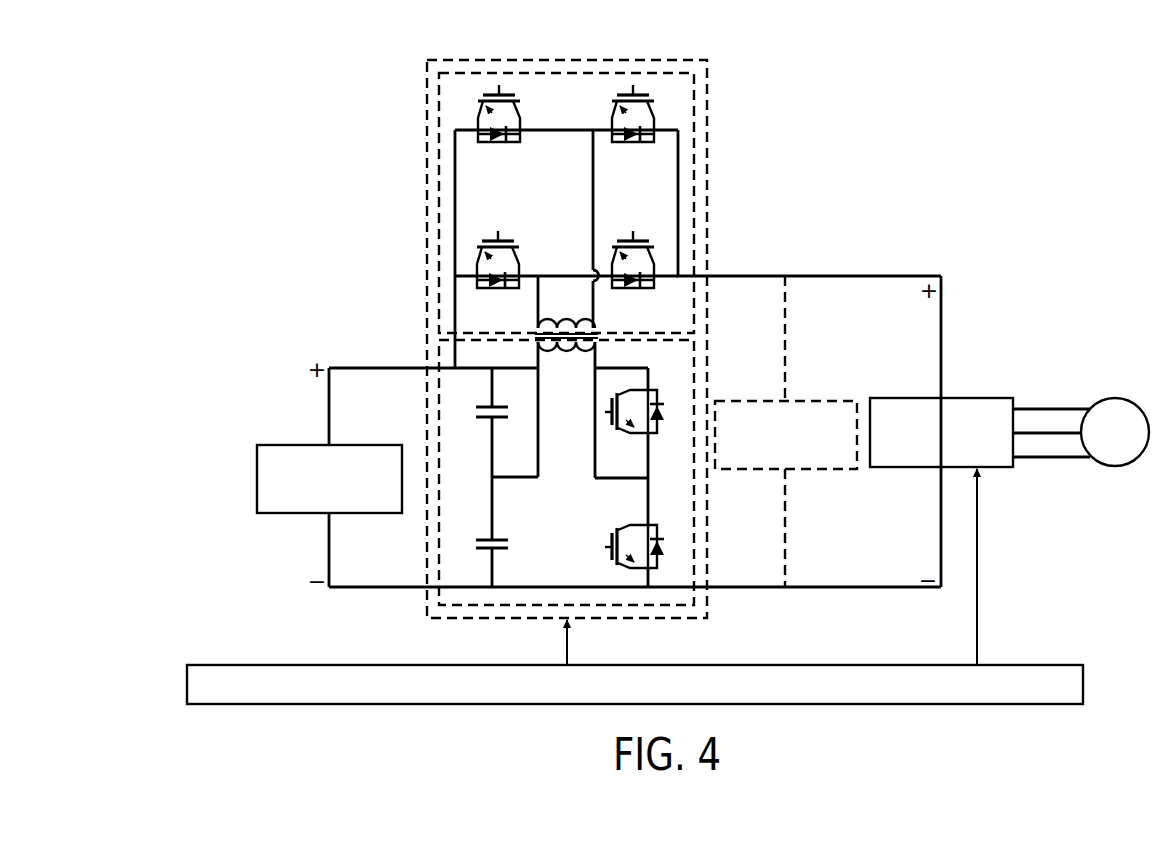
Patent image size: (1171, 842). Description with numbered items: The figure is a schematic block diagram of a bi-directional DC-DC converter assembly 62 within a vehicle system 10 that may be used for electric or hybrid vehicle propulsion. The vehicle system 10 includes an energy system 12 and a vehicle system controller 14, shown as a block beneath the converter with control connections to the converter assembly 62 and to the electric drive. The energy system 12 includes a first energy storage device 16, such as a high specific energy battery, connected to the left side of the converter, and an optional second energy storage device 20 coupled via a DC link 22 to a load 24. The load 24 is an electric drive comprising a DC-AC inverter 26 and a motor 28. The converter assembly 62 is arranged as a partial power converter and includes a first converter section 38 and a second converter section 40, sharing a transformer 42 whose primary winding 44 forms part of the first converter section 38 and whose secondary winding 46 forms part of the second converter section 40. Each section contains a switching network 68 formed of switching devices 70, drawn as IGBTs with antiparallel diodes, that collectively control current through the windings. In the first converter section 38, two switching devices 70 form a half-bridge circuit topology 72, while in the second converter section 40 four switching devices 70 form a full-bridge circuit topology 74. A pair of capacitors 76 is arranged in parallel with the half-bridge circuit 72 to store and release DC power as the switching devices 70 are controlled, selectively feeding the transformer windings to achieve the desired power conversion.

The vehicle system 10 is at (1024, 121).
The energy system 12 is at (829, 174).
The vehicle system controller 14 is at (1083, 688).
The first energy storage device 16 is at (292, 444).
The second energy storage device 20 is at (822, 400).
The DC link 22 is at (745, 276).
The load 24 is at (1040, 314).
The DC-AC inverter 26 is at (977, 398).
The motor 28 is at (1139, 458).
The first converter section 38 is at (482, 613).
The second converter section 40 is at (452, 62).
The transformer 42 is at (613, 379).
The primary winding 44 is at (567, 351).
The secondary winding 46 is at (567, 322).
The bi-directional DC-DC converter assembly 62 is at (702, 46).
The switching network 68 is at (564, 115).
The switching devices 70 is at (488, 143).
The half-bridge circuit topology 72 is at (590, 461).
The full-bridge circuit topology 74 is at (584, 178).
The capacitors 76 is at (484, 410).